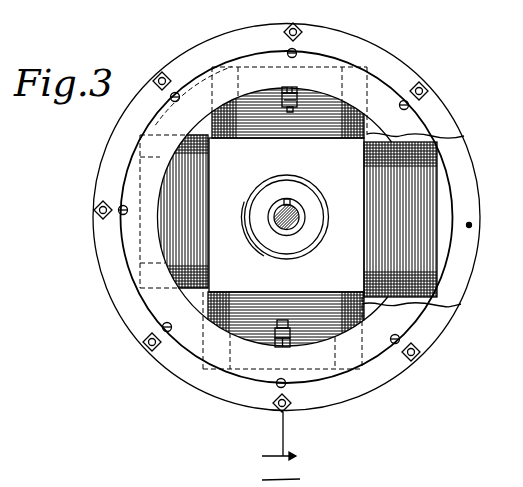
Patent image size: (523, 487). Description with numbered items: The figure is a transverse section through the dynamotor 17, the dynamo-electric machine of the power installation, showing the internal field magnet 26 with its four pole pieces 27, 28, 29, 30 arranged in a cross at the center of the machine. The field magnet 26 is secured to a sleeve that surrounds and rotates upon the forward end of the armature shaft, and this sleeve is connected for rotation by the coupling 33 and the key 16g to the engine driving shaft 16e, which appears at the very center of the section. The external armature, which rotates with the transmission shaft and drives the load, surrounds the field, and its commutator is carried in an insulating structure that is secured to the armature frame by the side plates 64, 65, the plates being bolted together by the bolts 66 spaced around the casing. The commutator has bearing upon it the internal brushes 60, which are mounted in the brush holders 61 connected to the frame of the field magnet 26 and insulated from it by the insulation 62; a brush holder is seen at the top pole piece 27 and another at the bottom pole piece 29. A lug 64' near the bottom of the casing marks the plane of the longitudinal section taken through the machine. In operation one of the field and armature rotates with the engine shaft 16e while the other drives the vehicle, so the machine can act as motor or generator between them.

The driving shaft 16e is at (300, 215).
The key 16g is at (292, 200).
The dynamotor 17 is at (270, 217).
The internal field magnet 26 is at (266, 218).
The pole piece 27 is at (288, 111).
The pole piece 28 is at (400, 219).
The pole piece 29 is at (286, 319).
The pole piece 30 is at (179, 211).
The coupling 33 is at (295, 233).
The internal brush 60 is at (300, 104).
The brush holder 61 is at (292, 100).
The insulation 62 is at (284, 327).
The side plate 64 is at (261, 180).
The lug 64' is at (292, 437).
The side plate 65 is at (293, 217).
The bolts 66 is at (303, 47).